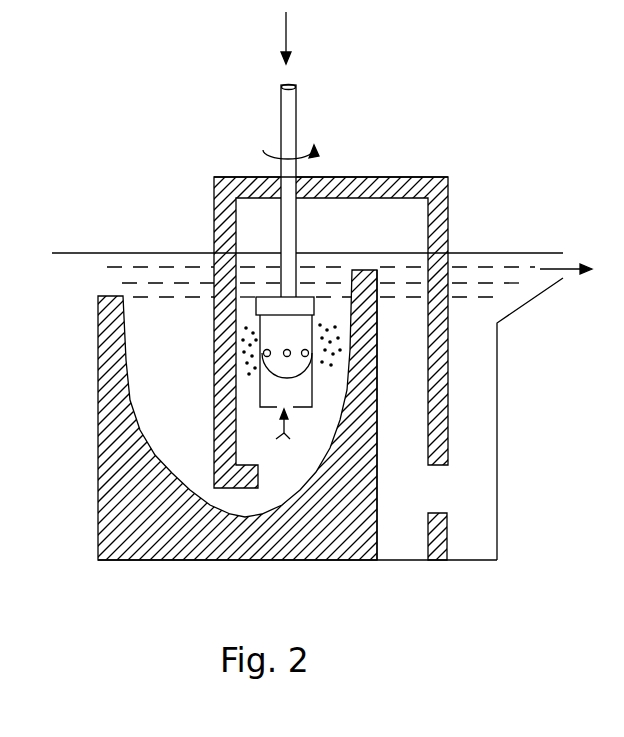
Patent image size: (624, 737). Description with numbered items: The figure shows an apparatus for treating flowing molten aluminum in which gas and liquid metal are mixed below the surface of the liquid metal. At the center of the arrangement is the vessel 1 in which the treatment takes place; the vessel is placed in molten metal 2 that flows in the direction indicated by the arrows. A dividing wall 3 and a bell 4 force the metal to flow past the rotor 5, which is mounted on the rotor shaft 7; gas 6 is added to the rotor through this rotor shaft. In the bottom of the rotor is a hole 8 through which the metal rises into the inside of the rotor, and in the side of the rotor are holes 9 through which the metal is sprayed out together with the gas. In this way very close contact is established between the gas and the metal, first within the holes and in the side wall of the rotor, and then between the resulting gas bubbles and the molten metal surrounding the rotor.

The vessel 1 is at (98, 385).
The molten metal 2 is at (105, 272).
The dividing wall 3 is at (377, 420).
The bell 4 is at (448, 362).
The rotor 5 is at (313, 333).
The gas 6 is at (286, 35).
The rotor shaft 7 is at (296, 108).
The hole 8 is at (300, 410).
The holes 9 is at (289, 356).